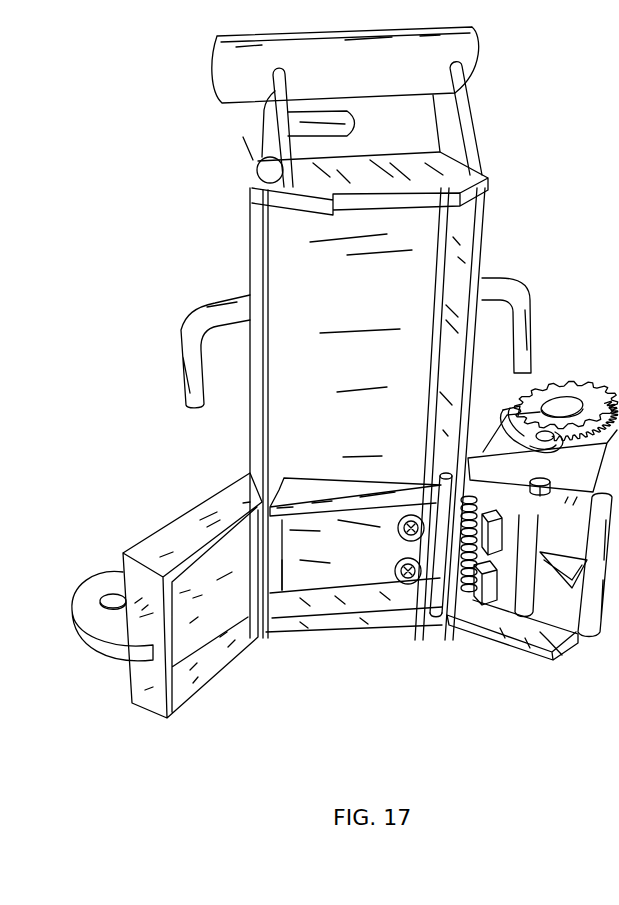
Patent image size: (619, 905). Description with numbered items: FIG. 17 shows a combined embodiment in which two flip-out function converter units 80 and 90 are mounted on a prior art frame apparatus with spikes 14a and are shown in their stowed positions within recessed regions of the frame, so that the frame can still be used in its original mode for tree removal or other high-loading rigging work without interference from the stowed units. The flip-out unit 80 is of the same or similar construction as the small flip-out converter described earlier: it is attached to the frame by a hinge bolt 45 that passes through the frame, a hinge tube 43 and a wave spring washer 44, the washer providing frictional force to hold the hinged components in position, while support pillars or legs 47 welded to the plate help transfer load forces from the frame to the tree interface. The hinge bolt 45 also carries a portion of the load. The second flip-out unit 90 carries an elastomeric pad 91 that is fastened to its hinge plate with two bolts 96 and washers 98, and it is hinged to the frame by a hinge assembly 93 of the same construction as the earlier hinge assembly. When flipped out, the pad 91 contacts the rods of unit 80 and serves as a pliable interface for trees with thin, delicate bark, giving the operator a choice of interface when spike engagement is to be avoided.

The frame apparatus with spikes 14a is at (500, 167).
The elastomeric pad 91 is at (323, 485).
The bolts 96 is at (398, 539).
The washers 98 is at (392, 532).
The hinge assembly 93 is at (423, 630).
The support pillars or legs 47 is at (517, 500).
The hinge bolt 45 is at (550, 478).
The flip-out function converter unit 80 is at (477, 636).
The wave spring washer 44 is at (513, 642).
The hinge tube 43 is at (549, 652).
The flip-out function converter unit 90 is at (359, 633).